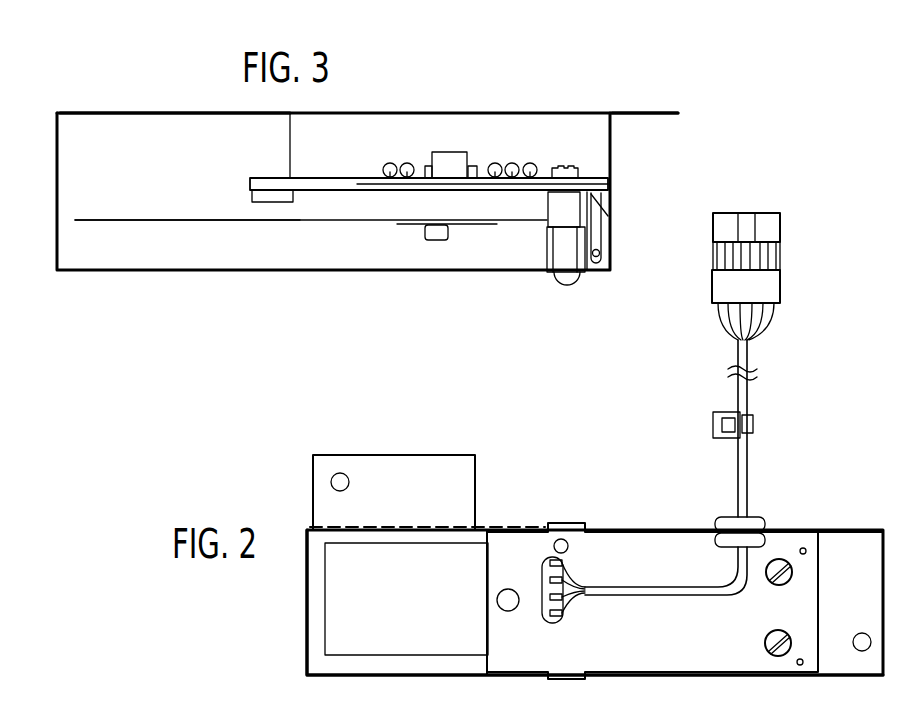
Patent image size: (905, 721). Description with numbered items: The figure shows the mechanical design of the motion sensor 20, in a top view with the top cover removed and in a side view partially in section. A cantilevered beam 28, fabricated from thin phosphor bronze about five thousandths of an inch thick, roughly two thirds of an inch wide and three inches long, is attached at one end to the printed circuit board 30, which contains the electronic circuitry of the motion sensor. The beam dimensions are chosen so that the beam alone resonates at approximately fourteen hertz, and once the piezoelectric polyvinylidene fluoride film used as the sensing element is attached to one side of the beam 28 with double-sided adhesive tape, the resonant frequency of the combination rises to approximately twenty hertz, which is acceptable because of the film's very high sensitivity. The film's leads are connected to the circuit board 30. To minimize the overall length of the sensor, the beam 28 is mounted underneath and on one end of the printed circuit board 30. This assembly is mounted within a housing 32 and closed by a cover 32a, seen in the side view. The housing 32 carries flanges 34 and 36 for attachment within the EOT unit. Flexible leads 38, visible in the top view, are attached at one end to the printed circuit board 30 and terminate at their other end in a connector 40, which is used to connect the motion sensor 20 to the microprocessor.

In FIG. 3, the motion sensor 20 is at (518, 90).
In FIG. 2, the motion sensor 20 is at (812, 413).
In FIG. 3, the cantilevered beam 28 is at (150, 222).
In FIG. 2, the cantilevered beam 28 is at (412, 617).
In FIG. 3, the printed circuit board 30 is at (250, 181).
In FIG. 2, the printed circuit board 30 is at (672, 647).
In FIG. 3, the housing 32 is at (56, 150).
In FIG. 2, the housing 32 is at (378, 677).
In FIG. 3, the cover 32a is at (107, 111).
In FIG. 2, the flange 34 is at (437, 455).
In FIG. 3, the flange 36 is at (662, 122).
In FIG. 2, the flange 36 is at (874, 540).
In FIG. 2, the flexible leads 38 is at (607, 582).
In FIG. 2, the connector 40 is at (780, 232).